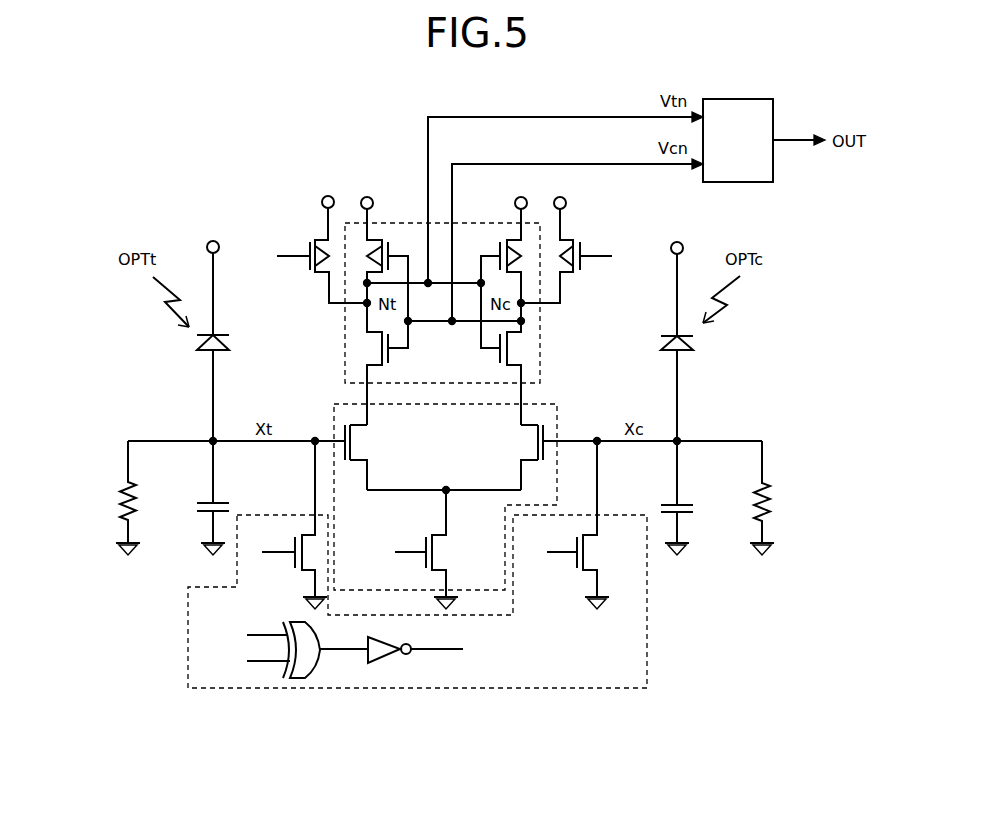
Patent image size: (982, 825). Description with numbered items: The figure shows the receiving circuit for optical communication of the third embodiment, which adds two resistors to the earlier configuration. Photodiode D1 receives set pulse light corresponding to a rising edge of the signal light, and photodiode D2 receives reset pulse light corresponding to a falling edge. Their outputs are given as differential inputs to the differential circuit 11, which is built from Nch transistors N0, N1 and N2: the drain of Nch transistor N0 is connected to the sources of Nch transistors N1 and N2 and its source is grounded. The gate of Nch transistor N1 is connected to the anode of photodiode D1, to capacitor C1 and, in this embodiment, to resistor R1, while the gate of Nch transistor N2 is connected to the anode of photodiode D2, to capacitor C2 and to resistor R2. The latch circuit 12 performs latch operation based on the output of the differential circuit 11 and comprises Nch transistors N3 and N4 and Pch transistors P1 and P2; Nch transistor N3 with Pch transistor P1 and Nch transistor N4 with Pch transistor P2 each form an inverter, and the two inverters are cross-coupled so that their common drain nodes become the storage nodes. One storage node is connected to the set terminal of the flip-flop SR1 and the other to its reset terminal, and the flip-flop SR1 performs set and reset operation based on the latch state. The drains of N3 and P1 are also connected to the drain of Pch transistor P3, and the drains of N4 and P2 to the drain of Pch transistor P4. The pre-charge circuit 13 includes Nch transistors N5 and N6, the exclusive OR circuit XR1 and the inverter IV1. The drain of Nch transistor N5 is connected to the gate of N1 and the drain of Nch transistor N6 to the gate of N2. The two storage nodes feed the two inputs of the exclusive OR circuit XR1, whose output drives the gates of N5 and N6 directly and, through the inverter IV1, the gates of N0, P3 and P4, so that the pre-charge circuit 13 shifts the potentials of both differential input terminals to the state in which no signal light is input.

The Pch transistor P1 is at (392, 240).
The Pch transistor P2 is at (496, 240).
The Pch transistor P3 is at (307, 245).
The Pch transistor P4 is at (588, 245).
The Nch transistor N0 is at (436, 552).
The Nch transistor N1 is at (352, 441).
The Nch transistor N2 is at (536, 441).
The Nch transistor N3 is at (388, 350).
The Nch transistor N4 is at (508, 350).
The Nch transistor N5 is at (305, 552).
The Nch transistor N6 is at (585, 552).
The photodiode D1 is at (197, 351).
The photodiode D2 is at (681, 353).
The resistor R1 is at (122, 490).
The resistor R2 is at (770, 490).
The capacitor C1 is at (205, 497).
The capacitor C2 is at (681, 503).
The flip-flop SR1 is at (750, 183).
The exclusive OR circuit XR1 is at (303, 680).
The inverter IV1 is at (378, 663).
The differential circuit 11 is at (330, 415).
The latch circuit 12 is at (545, 372).
The pre-charge circuit 13 is at (647, 580).